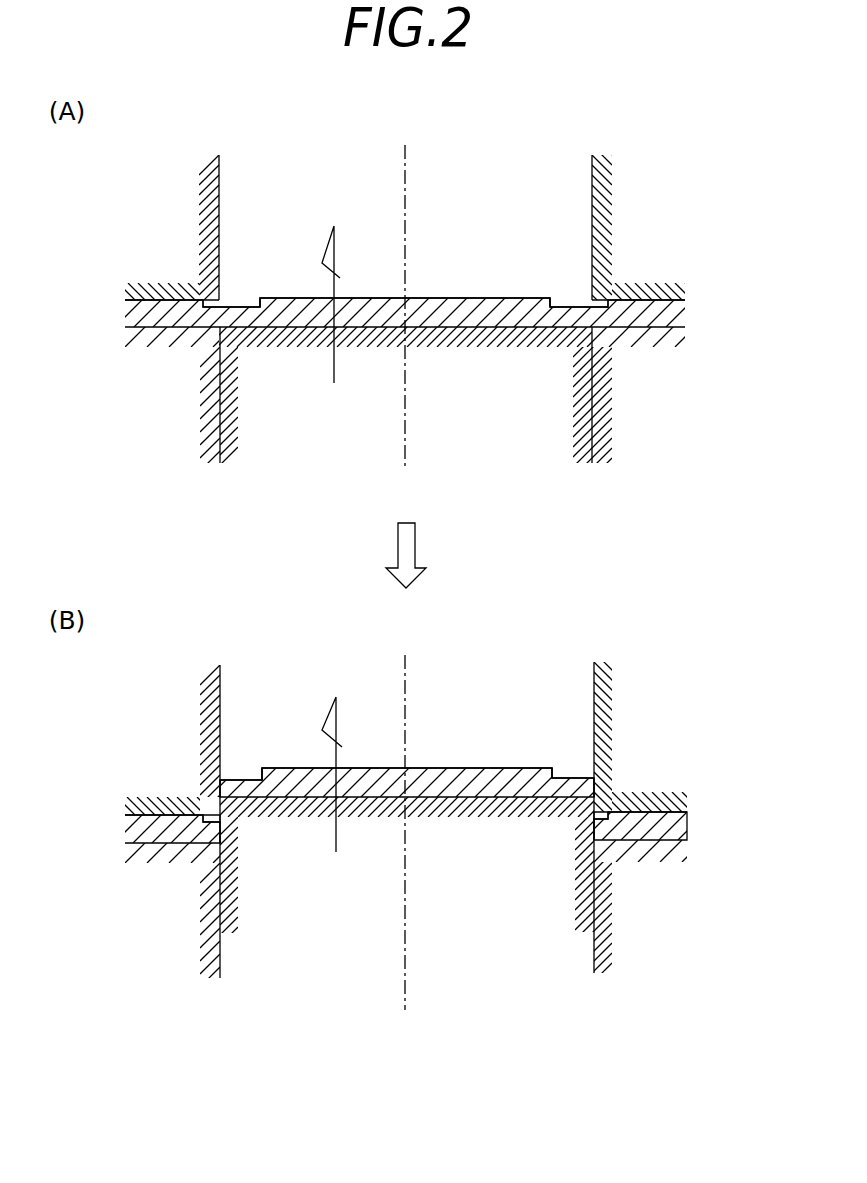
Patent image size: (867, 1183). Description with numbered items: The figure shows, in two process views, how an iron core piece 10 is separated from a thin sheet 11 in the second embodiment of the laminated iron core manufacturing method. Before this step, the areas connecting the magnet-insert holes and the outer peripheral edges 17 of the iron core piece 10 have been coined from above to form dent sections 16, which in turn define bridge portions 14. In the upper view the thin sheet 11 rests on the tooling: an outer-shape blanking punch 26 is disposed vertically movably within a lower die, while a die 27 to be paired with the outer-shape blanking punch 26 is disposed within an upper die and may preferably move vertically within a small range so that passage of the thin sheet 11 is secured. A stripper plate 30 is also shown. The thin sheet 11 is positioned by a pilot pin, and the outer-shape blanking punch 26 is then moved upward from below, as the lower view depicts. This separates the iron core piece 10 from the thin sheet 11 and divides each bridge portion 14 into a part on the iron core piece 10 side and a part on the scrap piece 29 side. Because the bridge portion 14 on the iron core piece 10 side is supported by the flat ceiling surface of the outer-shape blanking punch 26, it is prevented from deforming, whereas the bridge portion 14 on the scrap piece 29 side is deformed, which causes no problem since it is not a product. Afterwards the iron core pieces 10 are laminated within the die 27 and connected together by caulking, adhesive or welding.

The iron core piece 10 is at (449, 278).
The thin sheet 11 is at (683, 308).
The bridge portion 14 is at (213, 315).
The dent section 16 is at (243, 307).
The outer peripheral edge 17 is at (595, 783).
The outer-shape blanking punch 26 is at (540, 428).
The die 27 is at (627, 200).
The scrap piece 29 is at (667, 825).
The stripper plate 30 is at (173, 440).